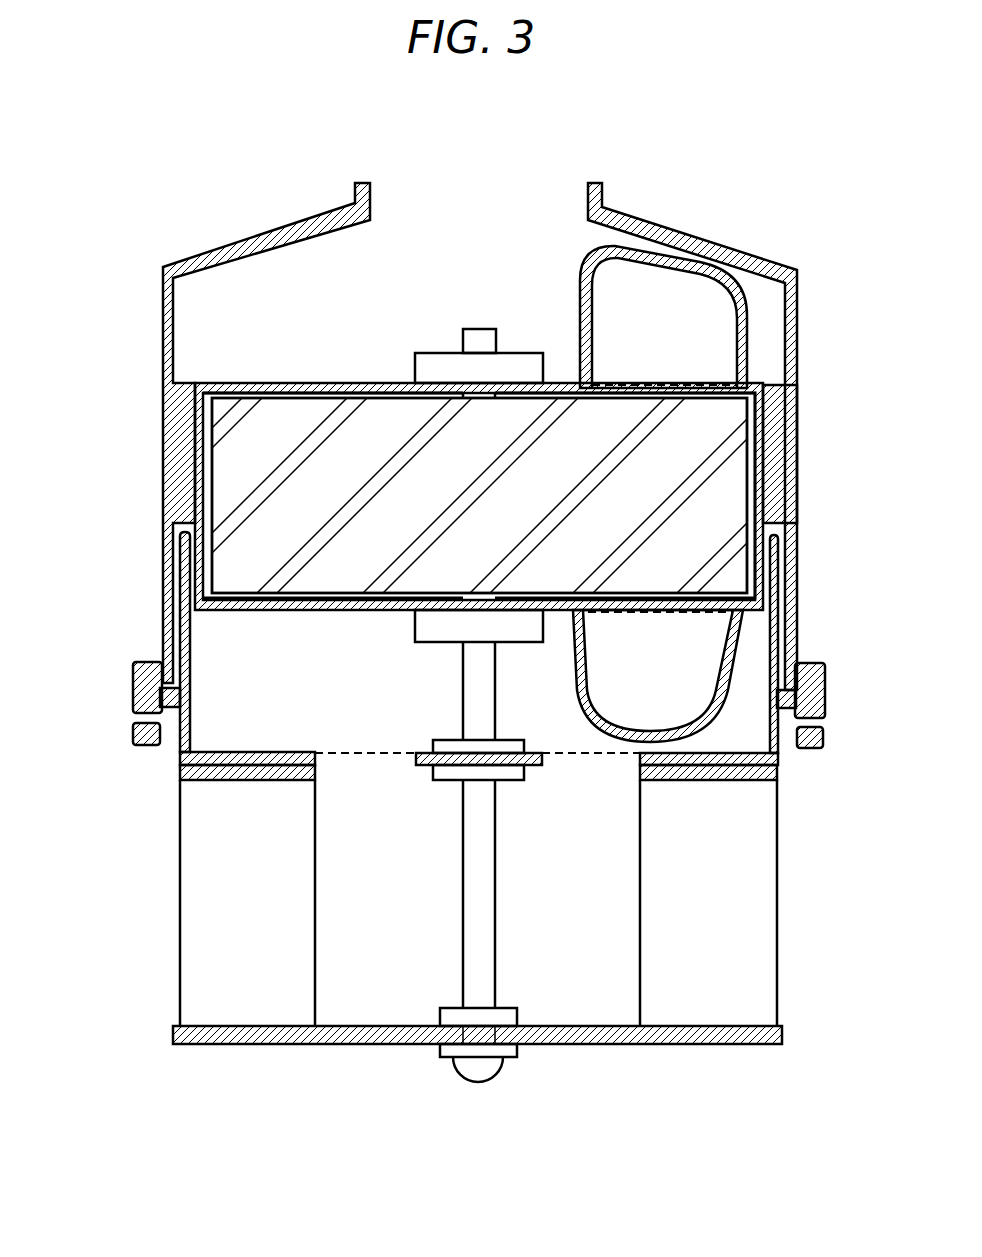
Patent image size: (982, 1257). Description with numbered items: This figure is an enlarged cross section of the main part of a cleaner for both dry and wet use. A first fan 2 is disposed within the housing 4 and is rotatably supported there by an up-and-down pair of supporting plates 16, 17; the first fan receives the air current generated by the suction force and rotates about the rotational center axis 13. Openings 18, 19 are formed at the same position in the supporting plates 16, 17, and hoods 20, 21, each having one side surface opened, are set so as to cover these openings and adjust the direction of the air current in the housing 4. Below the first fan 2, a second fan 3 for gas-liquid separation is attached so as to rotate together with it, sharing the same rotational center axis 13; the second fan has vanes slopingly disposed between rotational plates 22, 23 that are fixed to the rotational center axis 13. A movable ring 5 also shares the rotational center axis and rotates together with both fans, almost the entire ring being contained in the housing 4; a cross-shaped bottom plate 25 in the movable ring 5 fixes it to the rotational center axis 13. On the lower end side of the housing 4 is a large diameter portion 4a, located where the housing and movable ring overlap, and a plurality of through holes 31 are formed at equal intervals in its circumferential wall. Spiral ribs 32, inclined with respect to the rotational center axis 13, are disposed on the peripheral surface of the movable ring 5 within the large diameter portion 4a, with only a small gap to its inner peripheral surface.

The first fan 2 is at (257, 500).
The second fan 3 is at (722, 910).
The housing 4 is at (683, 234).
The large diameter portion 4a is at (143, 662).
The movable ring 5 is at (775, 555).
The rotational center axis 13 is at (478, 329).
The supporting plate 16 is at (283, 383).
The supporting plate 17 is at (310, 610).
The opening 18 is at (615, 378).
The opening 19 is at (645, 618).
The hood 20 is at (748, 352).
The hood 21 is at (738, 640).
The rotational plate 22 is at (773, 773).
The rotational plate 23 is at (783, 1035).
The bottom plate 25 is at (178, 738).
The through hole 31 is at (140, 720).
The spiral rib 32 is at (168, 690).